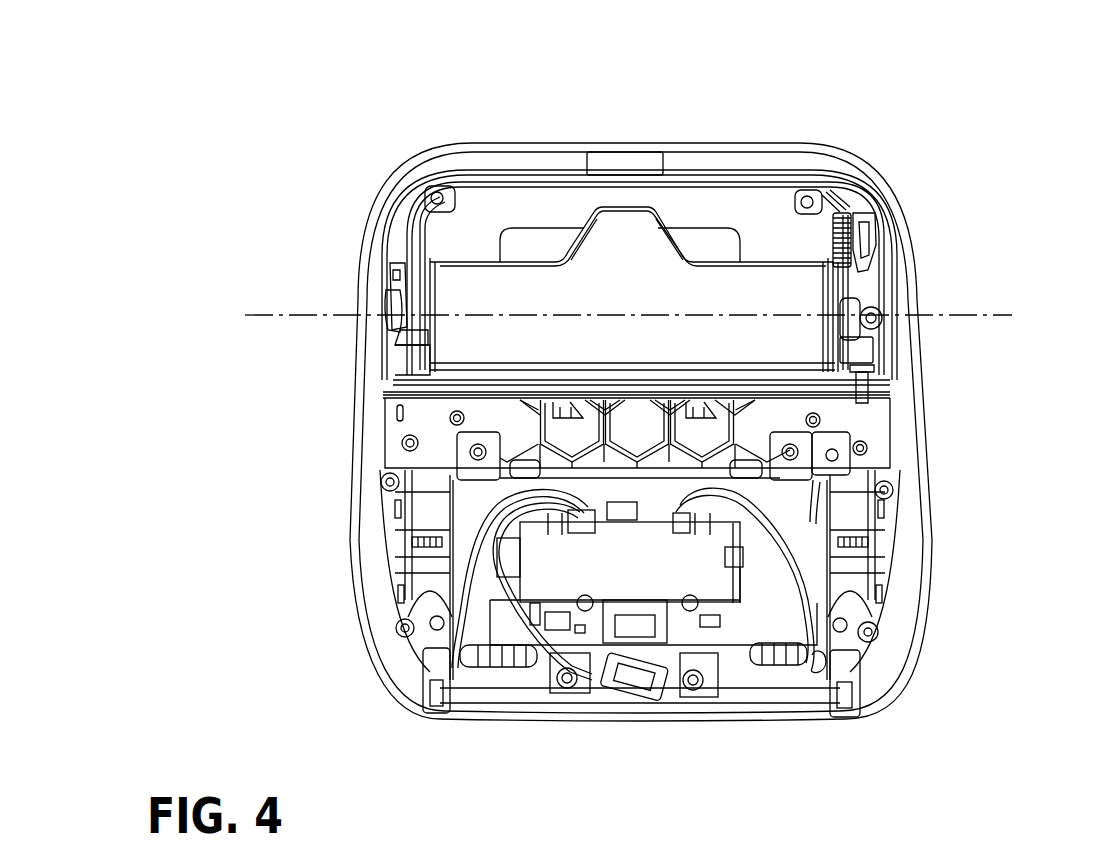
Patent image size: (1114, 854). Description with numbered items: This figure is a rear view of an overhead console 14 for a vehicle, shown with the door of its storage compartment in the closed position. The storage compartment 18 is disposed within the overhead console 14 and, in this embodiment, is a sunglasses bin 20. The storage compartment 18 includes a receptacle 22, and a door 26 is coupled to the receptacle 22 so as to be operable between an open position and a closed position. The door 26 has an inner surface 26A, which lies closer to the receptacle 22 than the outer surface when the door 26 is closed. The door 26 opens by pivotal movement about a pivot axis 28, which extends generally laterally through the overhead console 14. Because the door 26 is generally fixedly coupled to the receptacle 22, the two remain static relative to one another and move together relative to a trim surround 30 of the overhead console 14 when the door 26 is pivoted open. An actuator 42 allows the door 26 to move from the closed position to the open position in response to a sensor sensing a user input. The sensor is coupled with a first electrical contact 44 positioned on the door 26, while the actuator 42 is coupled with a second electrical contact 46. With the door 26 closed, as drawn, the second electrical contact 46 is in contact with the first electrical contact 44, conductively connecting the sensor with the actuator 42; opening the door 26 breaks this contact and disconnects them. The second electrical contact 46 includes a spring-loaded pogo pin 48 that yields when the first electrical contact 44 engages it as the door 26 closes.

The overhead console 14 is at (935, 112).
The storage compartment 18 is at (706, 199).
The sunglasses bin 20 is at (750, 218).
The receptacle 22 is at (793, 233).
The door 26 is at (790, 293).
The inner surface 26A is at (813, 300).
The pivot axis 28 is at (1015, 316).
The trim surround 30 is at (540, 153).
The actuator 42 is at (619, 166).
The first electrical contact 44 is at (887, 362).
The second electrical contact 46 is at (880, 372).
The pogo pin 48 is at (877, 380).